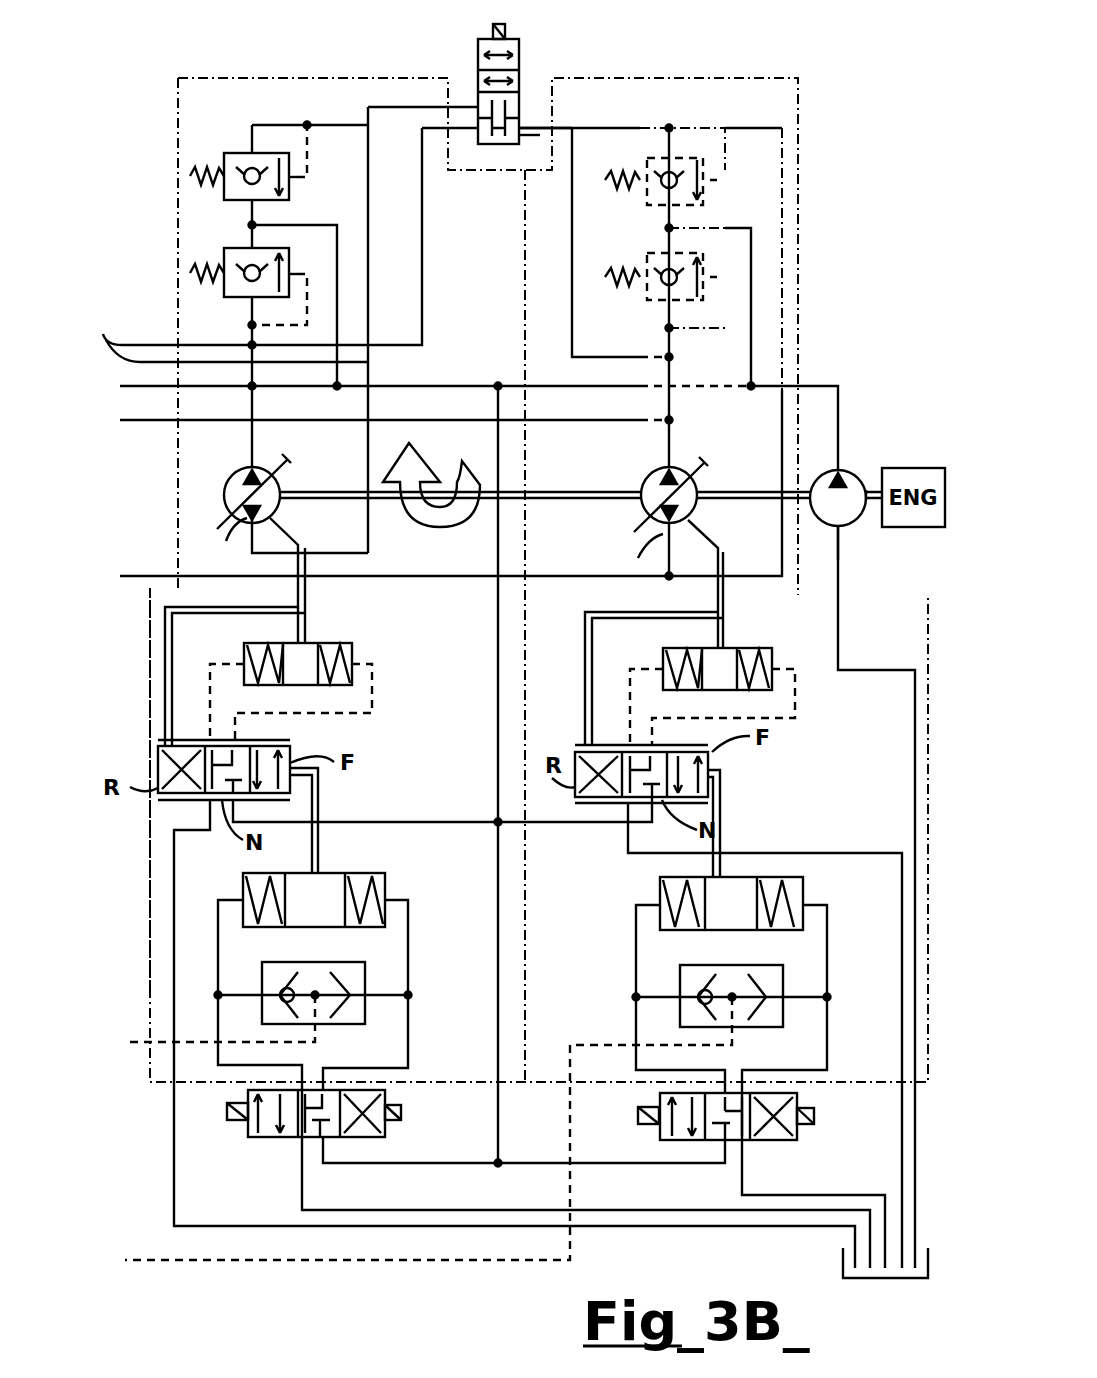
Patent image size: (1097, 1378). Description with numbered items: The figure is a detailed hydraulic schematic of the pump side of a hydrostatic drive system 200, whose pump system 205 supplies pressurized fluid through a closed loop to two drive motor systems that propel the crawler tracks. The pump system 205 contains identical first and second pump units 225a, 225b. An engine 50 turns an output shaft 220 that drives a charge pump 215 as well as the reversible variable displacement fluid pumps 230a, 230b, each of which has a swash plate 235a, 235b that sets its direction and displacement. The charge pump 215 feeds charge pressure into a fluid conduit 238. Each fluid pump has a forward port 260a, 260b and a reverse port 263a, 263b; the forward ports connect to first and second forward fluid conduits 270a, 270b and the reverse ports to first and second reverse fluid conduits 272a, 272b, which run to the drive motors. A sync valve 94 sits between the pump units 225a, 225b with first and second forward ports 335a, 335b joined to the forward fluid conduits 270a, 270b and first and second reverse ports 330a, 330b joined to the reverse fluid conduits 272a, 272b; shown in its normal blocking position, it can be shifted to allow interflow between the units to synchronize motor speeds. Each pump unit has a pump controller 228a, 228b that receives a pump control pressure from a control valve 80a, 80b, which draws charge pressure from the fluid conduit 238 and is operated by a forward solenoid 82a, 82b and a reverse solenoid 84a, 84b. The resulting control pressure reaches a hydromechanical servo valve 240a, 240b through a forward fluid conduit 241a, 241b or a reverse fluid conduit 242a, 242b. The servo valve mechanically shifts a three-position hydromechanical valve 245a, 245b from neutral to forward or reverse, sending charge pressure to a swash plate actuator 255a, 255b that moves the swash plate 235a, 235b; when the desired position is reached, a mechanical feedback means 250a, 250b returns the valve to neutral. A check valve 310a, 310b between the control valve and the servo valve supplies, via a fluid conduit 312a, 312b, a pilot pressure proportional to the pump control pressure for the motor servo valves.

The hydrostatic drive system 200 is at (192, 48).
The pump system 205 is at (730, 70).
The first pump unit 225a is at (178, 183).
The second pump unit 225b is at (800, 130).
The sync valve 94 is at (506, 35).
The first reverse port 330a is at (478, 105).
The second reverse port 330b is at (520, 105).
The first forward port 335a is at (478, 130).
The second forward port 335b is at (519, 135).
The first forward fluid conduit 270a is at (157, 345).
The first reverse fluid conduit 272a is at (252, 236).
The fluid conduit 238 is at (165, 386).
The second forward fluid conduit 270b is at (162, 421).
The second reverse fluid conduit 272b is at (163, 577).
The fluid pump 230a is at (282, 483).
The fluid pump 230b is at (698, 489).
The forward port 260a is at (262, 465).
The forward port 260b is at (672, 466).
The swash plate 235a is at (284, 512).
The swash plate 235b is at (645, 484).
The reverse port 263a is at (218, 544).
The reverse port 263b is at (618, 553).
The engine 50 is at (918, 468).
The output shaft 220 is at (872, 505).
The charge pump 215 is at (840, 528).
The mechanical feedback means 250a is at (205, 607).
The mechanical feedback means 250b is at (650, 610).
The swash plate actuator 255a is at (318, 643).
The swash plate actuator 255b is at (748, 648).
The three-position hydromechanical valve 245a is at (292, 750).
The three-position hydromechanical valve 245b is at (708, 760).
The pump controller 228a is at (146, 819).
The pump controller 228b is at (764, 801).
The hydromechanical servo valve 240a is at (368, 872).
The hydromechanical servo valve 240b is at (778, 878).
The forward fluid conduit 241a is at (412, 952).
The forward fluid conduit 241b is at (832, 930).
The reverse fluid conduit 242a is at (222, 962).
The reverse fluid conduit 242b is at (636, 955).
The check valve 310a is at (328, 1025).
The check valve 310b is at (763, 965).
The fluid conduit 312a is at (125, 1042).
The fluid conduit 312b is at (174, 1251).
The control valve 80a is at (385, 1103).
The control valve 80b is at (797, 1097).
The forward solenoid 82a is at (240, 1120).
The forward solenoid 82b is at (648, 1124).
The reverse solenoid 84a is at (392, 1122).
The reverse solenoid 84b is at (800, 1127).